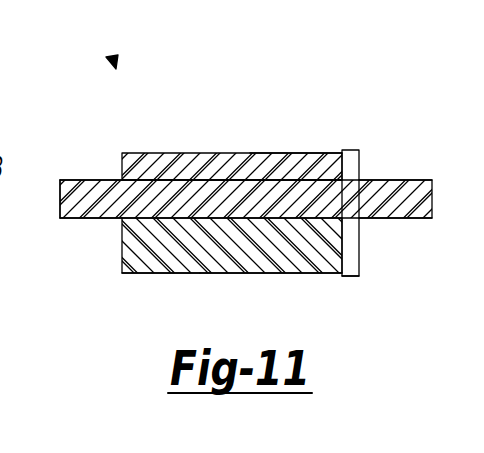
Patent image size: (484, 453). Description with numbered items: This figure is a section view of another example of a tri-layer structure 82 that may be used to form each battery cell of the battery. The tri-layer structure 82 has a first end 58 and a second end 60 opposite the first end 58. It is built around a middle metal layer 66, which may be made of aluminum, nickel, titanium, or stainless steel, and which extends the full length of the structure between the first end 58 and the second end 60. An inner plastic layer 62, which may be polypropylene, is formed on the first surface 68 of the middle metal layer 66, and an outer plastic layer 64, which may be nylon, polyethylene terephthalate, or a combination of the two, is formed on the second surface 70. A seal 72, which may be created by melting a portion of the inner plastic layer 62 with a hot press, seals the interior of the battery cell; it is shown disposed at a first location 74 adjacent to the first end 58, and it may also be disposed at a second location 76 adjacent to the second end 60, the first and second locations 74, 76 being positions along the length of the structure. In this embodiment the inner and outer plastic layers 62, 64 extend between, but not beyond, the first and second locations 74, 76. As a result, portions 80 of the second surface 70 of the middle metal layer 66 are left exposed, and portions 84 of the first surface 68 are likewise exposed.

The first end 58 is at (433, 191).
The second end 60 is at (60, 199).
The inner plastic layer 62 is at (219, 250).
The outer plastic layer 64 is at (190, 167).
The middle metal layer 66 is at (251, 190).
The first surface 68 is at (273, 218).
The second surface 70 is at (300, 178).
The seal 72 is at (348, 150).
The first location 74 is at (349, 276).
The second location 76 is at (166, 273).
The portions of the second surface 80 is at (95, 178).
The tri-layer structure 82 is at (112, 60).
The portions of the first surface 84 is at (90, 220).